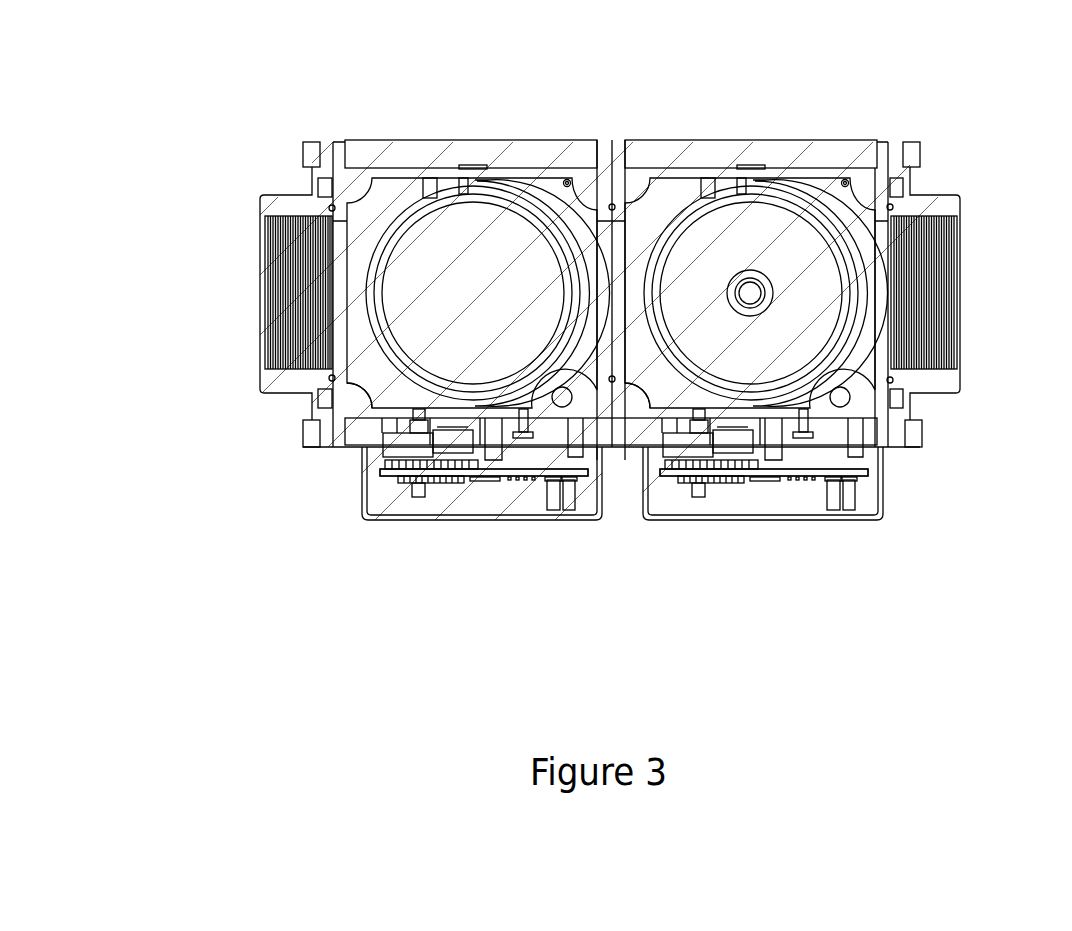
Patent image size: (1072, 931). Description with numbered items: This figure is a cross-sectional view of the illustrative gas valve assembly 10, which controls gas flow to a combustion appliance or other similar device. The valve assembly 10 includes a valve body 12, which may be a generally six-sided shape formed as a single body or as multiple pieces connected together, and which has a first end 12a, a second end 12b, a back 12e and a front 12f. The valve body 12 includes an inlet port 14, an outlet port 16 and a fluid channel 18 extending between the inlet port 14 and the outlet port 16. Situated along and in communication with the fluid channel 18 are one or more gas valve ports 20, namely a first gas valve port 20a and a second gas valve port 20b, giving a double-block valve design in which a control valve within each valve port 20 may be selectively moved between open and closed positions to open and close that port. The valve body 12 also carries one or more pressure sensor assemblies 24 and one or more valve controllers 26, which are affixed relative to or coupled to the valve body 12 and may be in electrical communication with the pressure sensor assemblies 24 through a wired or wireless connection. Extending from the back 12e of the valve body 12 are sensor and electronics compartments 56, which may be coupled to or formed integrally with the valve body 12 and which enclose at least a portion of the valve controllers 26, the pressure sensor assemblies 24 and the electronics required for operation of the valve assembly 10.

The valve assembly 10 is at (193, 72).
The valve body 12 is at (355, 452).
The first end 12a is at (310, 182).
The second end 12b is at (915, 180).
The back 12e is at (337, 452).
The front 12f is at (848, 140).
The inlet port 14 is at (263, 232).
The outlet port 16 is at (955, 233).
The fluid channel 18 is at (392, 380).
The gas valve ports 20 is at (370, 235).
The first gas valve port 20a is at (398, 210).
The second gas valve port 20b is at (685, 207).
The pressure sensor assemblies 24 is at (447, 445).
The valve controllers 26 is at (473, 495).
The sensor and electronics compartments 56 is at (570, 520).